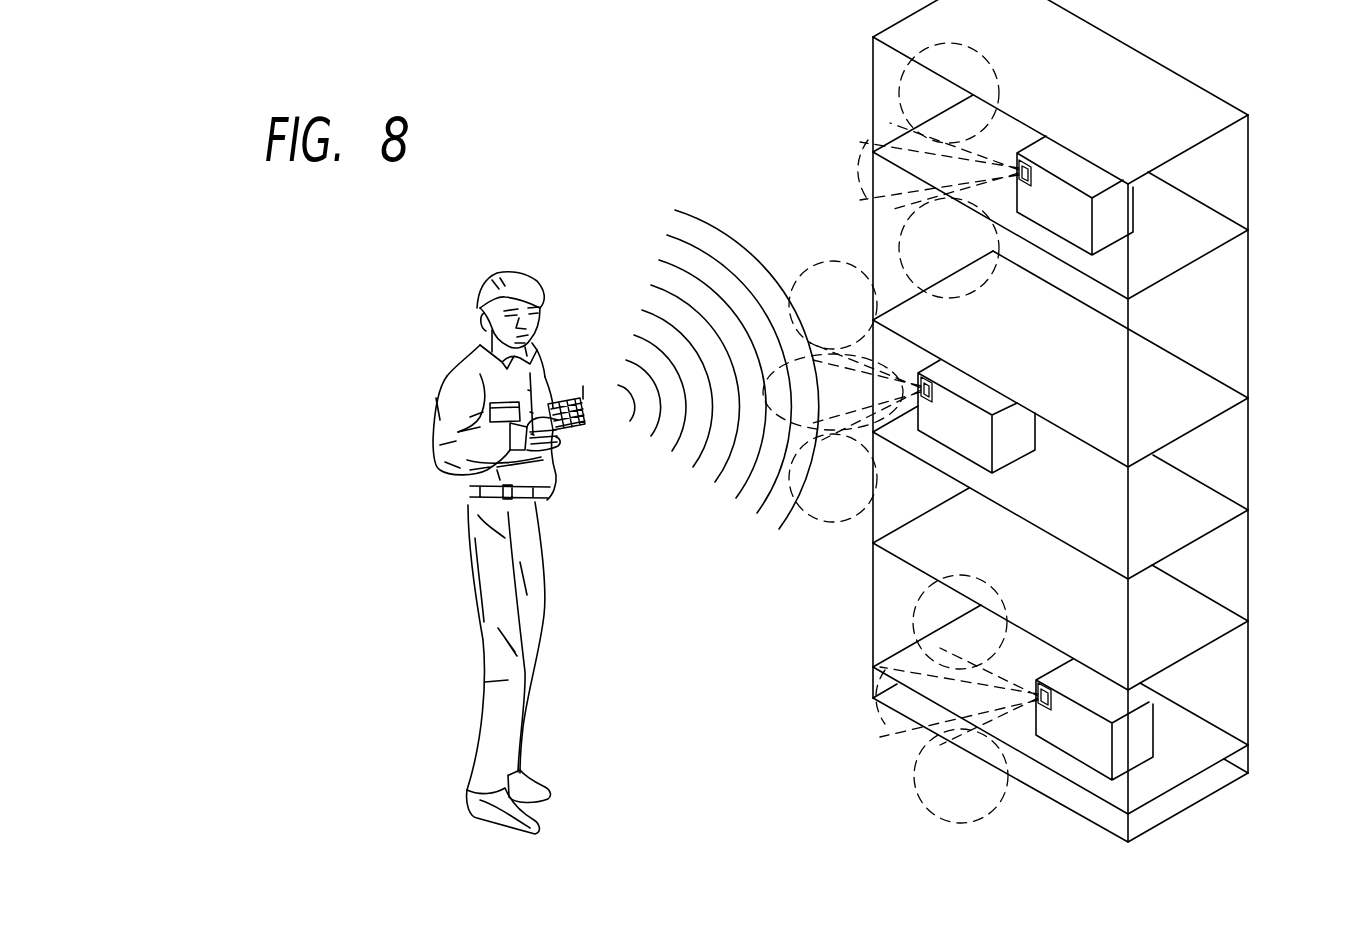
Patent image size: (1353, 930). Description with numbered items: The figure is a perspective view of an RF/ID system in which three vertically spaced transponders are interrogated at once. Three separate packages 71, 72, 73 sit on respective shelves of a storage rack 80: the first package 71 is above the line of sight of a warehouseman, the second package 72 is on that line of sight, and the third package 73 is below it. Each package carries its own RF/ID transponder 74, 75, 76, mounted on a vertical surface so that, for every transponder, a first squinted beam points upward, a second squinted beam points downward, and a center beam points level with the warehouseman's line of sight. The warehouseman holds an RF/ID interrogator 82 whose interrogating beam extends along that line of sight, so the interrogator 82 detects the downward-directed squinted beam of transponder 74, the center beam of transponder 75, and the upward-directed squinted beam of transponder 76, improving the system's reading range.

The first package 71 is at (1103, 210).
The second package 72 is at (1012, 433).
The third package 73 is at (1138, 742).
The RF/ID transponder 74 is at (1021, 160).
The RF/ID transponder 75 is at (932, 403).
The RF/ID transponder 76 is at (1040, 682).
The storage rack 80 is at (1250, 160).
The RF/ID interrogator 82 is at (588, 422).